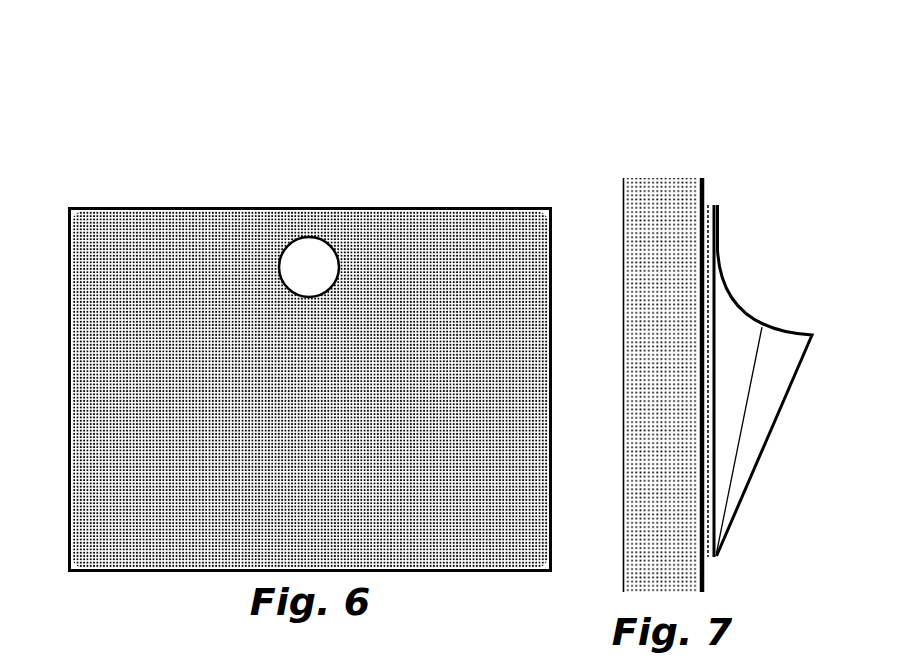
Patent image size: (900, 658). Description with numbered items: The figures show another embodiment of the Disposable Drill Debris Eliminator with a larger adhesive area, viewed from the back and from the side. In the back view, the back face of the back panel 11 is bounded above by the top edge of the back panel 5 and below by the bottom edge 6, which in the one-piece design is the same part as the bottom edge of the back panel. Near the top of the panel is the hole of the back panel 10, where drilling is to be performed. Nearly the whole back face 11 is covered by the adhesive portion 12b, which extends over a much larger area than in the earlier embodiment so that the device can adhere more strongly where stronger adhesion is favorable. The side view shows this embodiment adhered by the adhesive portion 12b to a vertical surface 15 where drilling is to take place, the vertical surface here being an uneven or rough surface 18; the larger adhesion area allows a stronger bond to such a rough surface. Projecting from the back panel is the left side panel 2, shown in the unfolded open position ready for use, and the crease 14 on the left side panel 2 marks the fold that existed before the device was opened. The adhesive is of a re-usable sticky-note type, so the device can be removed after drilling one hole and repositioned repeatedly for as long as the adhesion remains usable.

In FIG. 7, the left side panel 2 is at (743, 324).
In FIG. 6, the top edge of the back panel 5 is at (336, 189).
In FIG. 6, the bottom edge of the front panel 6 is at (185, 586).
In FIG. 6, the hole of the back panel 10 is at (296, 254).
In FIG. 6, the back face of the back panel 11 is at (120, 417).
In FIG. 6, the adhesive portion 12b is at (445, 263).
In FIG. 7, the adhesive portion 12b is at (714, 192).
In FIG. 7, the crease 14 is at (752, 419).
In FIG. 7, the vertical surface 15 is at (629, 537).
In FIG. 7, the rough surface 18 is at (704, 163).